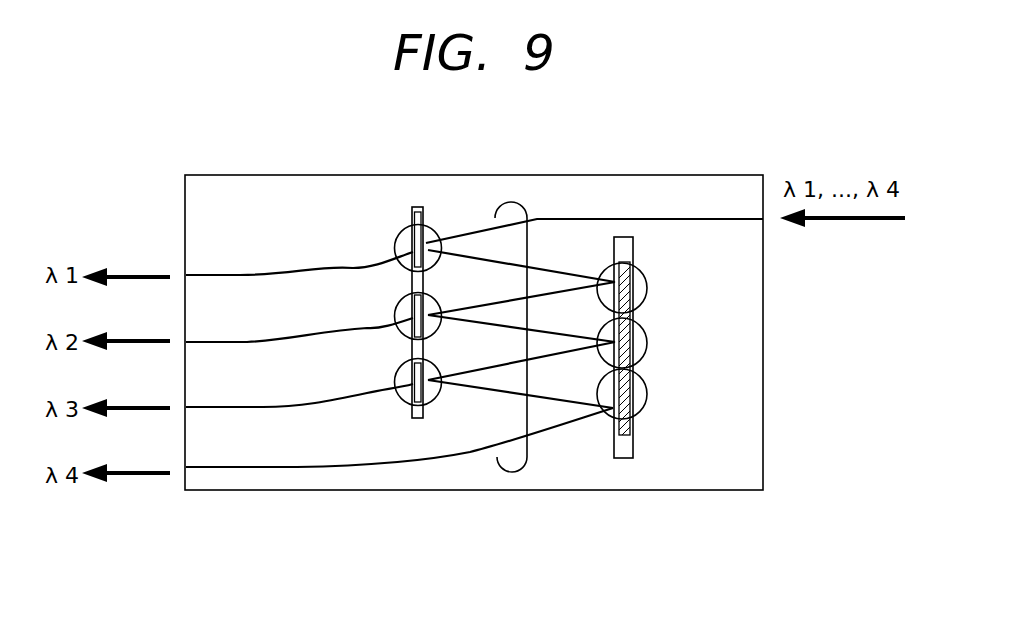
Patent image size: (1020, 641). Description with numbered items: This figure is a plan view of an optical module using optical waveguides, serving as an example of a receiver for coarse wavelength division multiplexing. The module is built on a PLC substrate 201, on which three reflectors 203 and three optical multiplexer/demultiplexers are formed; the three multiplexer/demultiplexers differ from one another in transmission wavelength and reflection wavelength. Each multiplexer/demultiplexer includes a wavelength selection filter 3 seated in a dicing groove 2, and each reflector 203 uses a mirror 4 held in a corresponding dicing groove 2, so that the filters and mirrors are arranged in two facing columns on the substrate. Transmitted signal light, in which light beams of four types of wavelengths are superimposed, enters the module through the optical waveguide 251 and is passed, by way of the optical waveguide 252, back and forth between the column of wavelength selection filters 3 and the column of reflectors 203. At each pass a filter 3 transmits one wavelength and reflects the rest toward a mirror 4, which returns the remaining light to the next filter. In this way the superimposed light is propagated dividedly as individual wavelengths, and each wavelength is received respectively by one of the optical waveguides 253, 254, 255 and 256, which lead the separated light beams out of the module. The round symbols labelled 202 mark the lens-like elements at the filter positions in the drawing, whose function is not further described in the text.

The PLC substrate 201 is at (685, 175).
The optical waveguide 251 is at (653, 219).
The optical waveguide 252 is at (527, 457).
The optical waveguide 253 is at (210, 275).
The optical waveguide 254 is at (210, 341).
The optical waveguide 255 is at (210, 407).
The optical waveguide 256 is at (210, 467).
The dicing groove 2 is at (418, 207).
The wavelength selection filter 3 is at (418, 242).
The mirror 4 is at (628, 427).
The collimating lens 202 is at (394, 245).
The reflector 203 is at (647, 287).